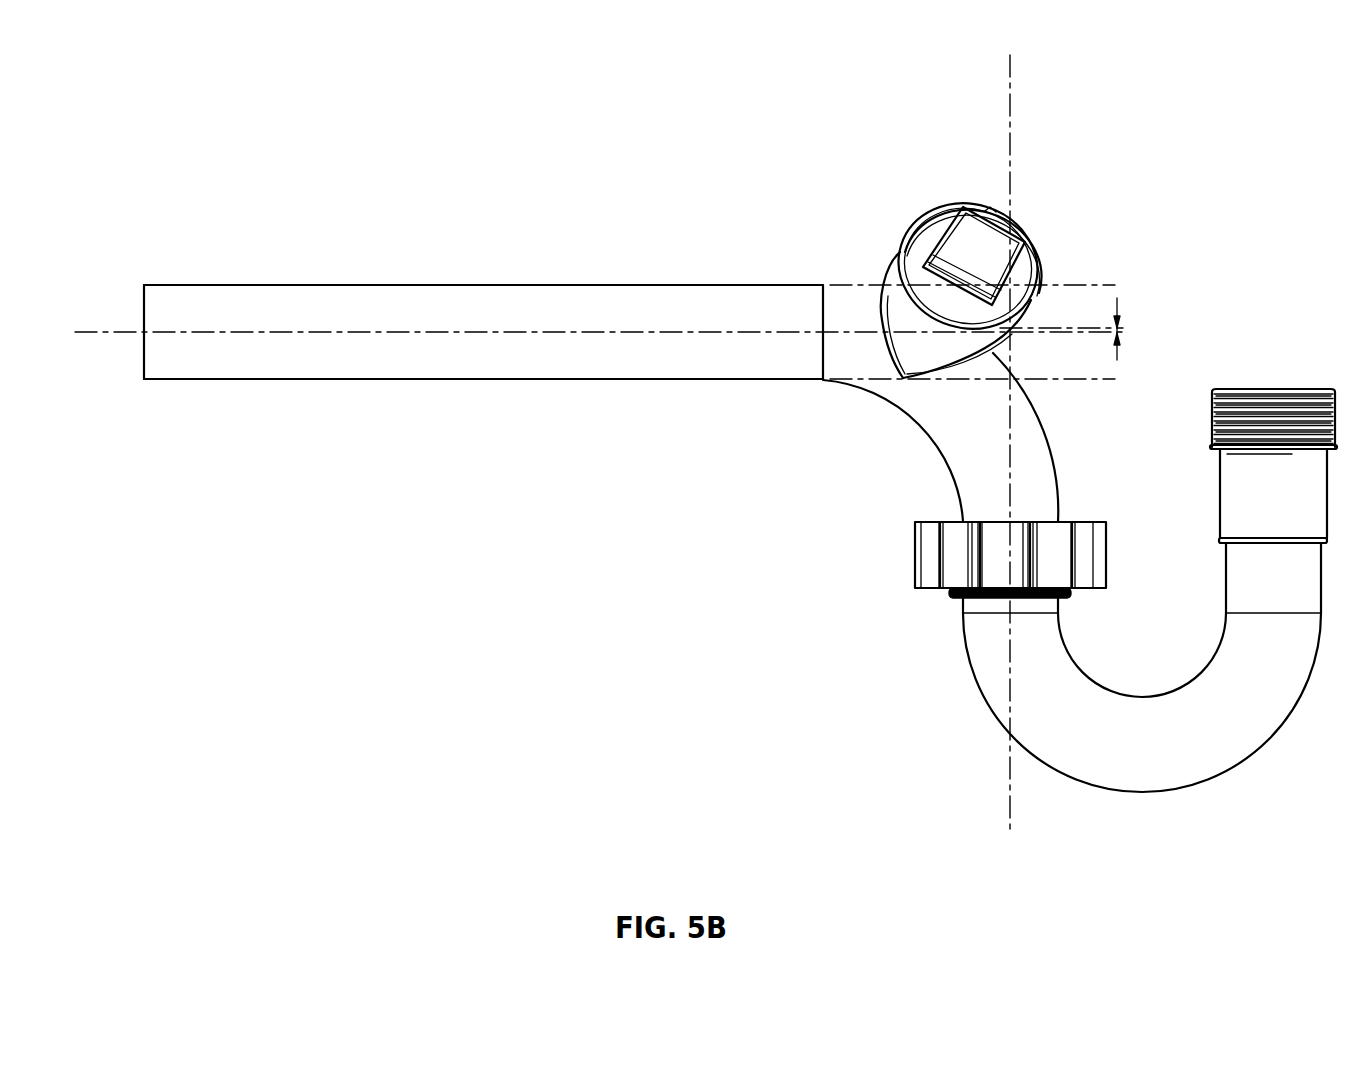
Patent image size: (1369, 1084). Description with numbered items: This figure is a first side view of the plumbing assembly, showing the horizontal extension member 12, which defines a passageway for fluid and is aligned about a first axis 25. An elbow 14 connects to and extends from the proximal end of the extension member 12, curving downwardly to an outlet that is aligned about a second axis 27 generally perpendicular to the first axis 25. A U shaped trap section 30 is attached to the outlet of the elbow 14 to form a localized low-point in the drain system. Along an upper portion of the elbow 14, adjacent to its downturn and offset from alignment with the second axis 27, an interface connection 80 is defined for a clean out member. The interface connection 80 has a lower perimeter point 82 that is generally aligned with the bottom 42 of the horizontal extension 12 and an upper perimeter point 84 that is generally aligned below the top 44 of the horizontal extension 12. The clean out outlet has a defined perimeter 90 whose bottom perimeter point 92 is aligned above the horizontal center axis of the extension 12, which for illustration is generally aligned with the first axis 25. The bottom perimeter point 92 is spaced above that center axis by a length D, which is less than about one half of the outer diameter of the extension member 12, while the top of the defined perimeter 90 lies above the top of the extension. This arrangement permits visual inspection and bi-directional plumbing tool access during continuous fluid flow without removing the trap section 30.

The extension member 12 is at (400, 297).
The top of the horizontal extension 44 is at (505, 283).
The bottom of the horizontal extension 42 is at (450, 382).
The first axis 25 is at (593, 285).
The second axis 27 is at (1008, 786).
The interface connection 80 is at (941, 357).
The upper perimeter point 84 is at (882, 298).
The bottom perimeter point 92 is at (997, 334).
The lower perimeter point 82 is at (906, 380).
The defined perimeter 90 is at (924, 206).
The elbow 14 is at (1035, 455).
The trap section 30 is at (1277, 712).
The length D is at (1140, 330).